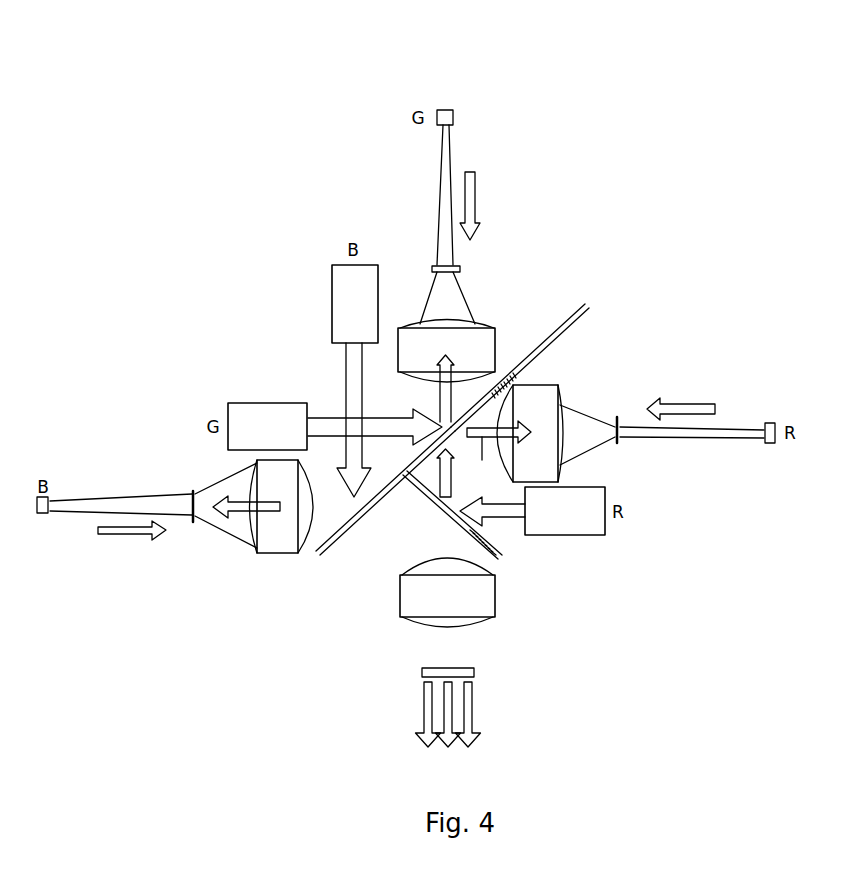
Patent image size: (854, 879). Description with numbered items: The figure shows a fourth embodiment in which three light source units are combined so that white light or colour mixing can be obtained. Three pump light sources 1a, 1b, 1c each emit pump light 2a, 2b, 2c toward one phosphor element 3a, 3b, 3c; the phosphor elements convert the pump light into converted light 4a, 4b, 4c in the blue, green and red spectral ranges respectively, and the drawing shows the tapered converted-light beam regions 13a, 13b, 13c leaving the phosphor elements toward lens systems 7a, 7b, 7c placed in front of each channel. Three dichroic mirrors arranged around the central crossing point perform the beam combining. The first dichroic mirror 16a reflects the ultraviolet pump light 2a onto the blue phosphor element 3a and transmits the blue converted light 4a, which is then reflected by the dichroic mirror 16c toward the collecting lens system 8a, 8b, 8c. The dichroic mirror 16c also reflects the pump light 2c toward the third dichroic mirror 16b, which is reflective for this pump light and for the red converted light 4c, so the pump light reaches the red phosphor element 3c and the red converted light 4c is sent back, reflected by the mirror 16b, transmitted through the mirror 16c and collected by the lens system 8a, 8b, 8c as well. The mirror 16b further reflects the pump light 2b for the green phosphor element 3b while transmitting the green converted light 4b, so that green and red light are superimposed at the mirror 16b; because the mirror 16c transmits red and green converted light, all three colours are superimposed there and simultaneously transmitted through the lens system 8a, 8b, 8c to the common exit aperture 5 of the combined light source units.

The pump light source 1a is at (348, 295).
The pump light source 1b is at (265, 412).
The pump light source 1c is at (570, 528).
The pump light 2a is at (357, 397).
The pump light 2b is at (322, 418).
The pump light 2c is at (453, 475).
The phosphor element 3a is at (43, 514).
The phosphor element 3b is at (445, 110).
The phosphor element 3c is at (770, 423).
The converted light 4a is at (131, 535).
The converted light 4b is at (476, 198).
The converted light 4c is at (690, 403).
The exit aperture 5 is at (422, 668).
The collimating lens (blue) 7a is at (278, 555).
The collimating lens (green) 7b is at (483, 343).
The collimating lens (red) 7c is at (545, 385).
The focusing lens 8a is at (488, 611).
The focusing lens 8b is at (488, 611).
The focusing lens 8c is at (497, 607).
The blue detection light path / light guide 13a is at (137, 505).
The green detection light path / light guide 13b is at (442, 157).
The red detection light path / light guide 13c is at (635, 438).
The first dichroic mirror 16a is at (352, 532).
The third dichroic mirror 16b is at (588, 307).
The dichroic mirror 16c is at (499, 556).